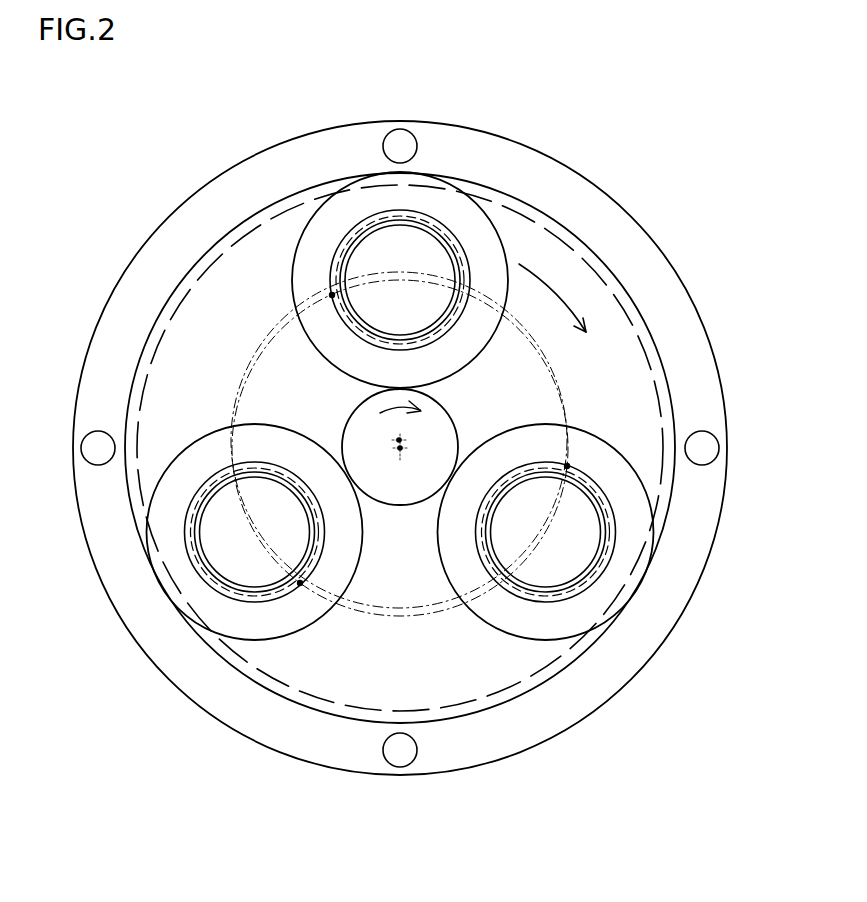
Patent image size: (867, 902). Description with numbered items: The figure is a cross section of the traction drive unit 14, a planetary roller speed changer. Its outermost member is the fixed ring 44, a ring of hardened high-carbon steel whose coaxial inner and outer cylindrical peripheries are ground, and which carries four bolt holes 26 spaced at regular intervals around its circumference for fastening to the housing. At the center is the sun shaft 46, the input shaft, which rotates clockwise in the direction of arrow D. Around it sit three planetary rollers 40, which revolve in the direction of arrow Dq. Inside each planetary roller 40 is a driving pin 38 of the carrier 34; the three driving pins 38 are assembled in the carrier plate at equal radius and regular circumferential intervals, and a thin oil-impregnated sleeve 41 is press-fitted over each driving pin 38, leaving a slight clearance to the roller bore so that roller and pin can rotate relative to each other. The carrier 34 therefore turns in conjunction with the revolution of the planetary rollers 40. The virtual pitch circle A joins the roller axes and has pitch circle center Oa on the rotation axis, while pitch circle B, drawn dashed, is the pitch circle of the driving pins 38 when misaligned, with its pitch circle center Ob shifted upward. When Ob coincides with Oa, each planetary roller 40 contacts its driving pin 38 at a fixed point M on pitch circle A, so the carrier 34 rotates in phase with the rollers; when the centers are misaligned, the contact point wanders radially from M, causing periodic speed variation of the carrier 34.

The traction drive unit 14 is at (636, 158).
The bolt holes 26 is at (405, 130).
The carrier 34 is at (520, 208).
The driving pins 38 is at (405, 235).
The planetary rollers 40 is at (360, 230).
The sleeves 41 is at (347, 240).
The fixed ring 44 is at (640, 227).
The sun shaft 46 is at (412, 506).
The point M is at (332, 295).
The pitch circle center Oa is at (405, 451).
The pitch circle center Ob is at (396, 439).
The pitch circle A is at (437, 614).
The pitch circle B is at (378, 610).
The arrow D is at (410, 404).
The arrow Dq is at (555, 298).